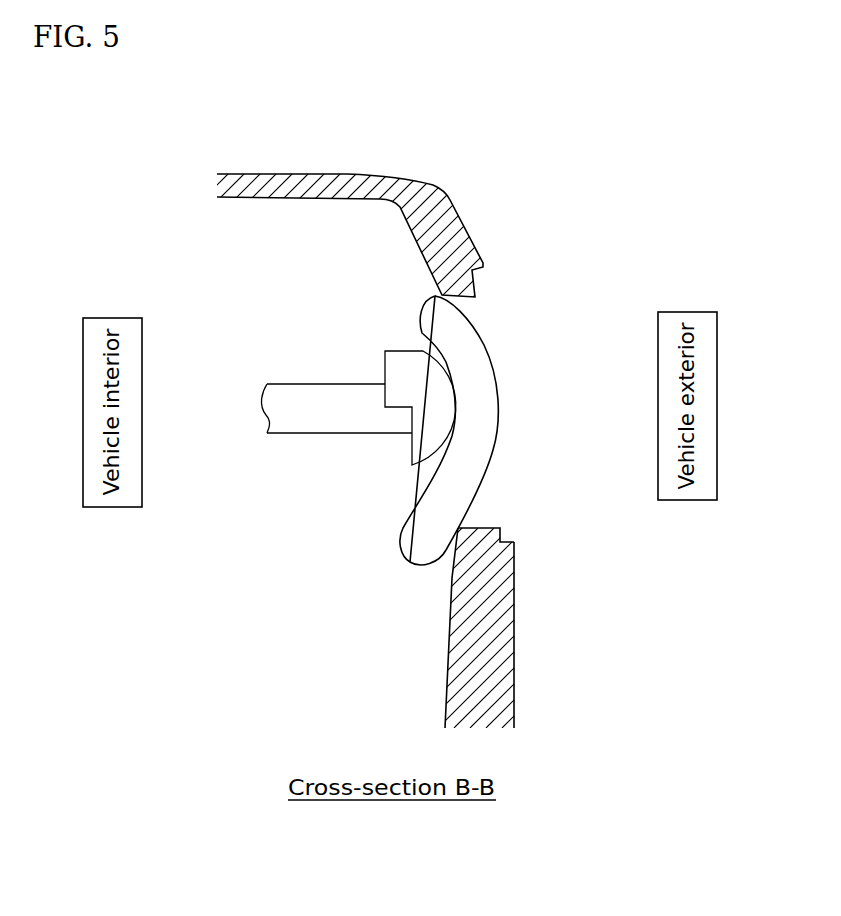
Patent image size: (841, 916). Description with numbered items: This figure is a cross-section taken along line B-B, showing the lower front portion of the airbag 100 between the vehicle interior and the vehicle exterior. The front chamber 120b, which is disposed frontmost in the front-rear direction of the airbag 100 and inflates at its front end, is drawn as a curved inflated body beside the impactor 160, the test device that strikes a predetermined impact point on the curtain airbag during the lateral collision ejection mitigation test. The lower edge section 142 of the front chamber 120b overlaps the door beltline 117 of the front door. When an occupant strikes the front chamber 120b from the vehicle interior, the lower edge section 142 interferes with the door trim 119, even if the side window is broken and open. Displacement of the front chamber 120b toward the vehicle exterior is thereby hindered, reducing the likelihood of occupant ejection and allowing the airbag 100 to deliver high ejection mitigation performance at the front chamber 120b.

The airbag 100 is at (393, 294).
The impactor 160 is at (302, 384).
The front chamber 120b is at (445, 474).
The lower edge section 142 is at (400, 562).
The door beltline 117 is at (483, 528).
The door trim 119 is at (452, 578).